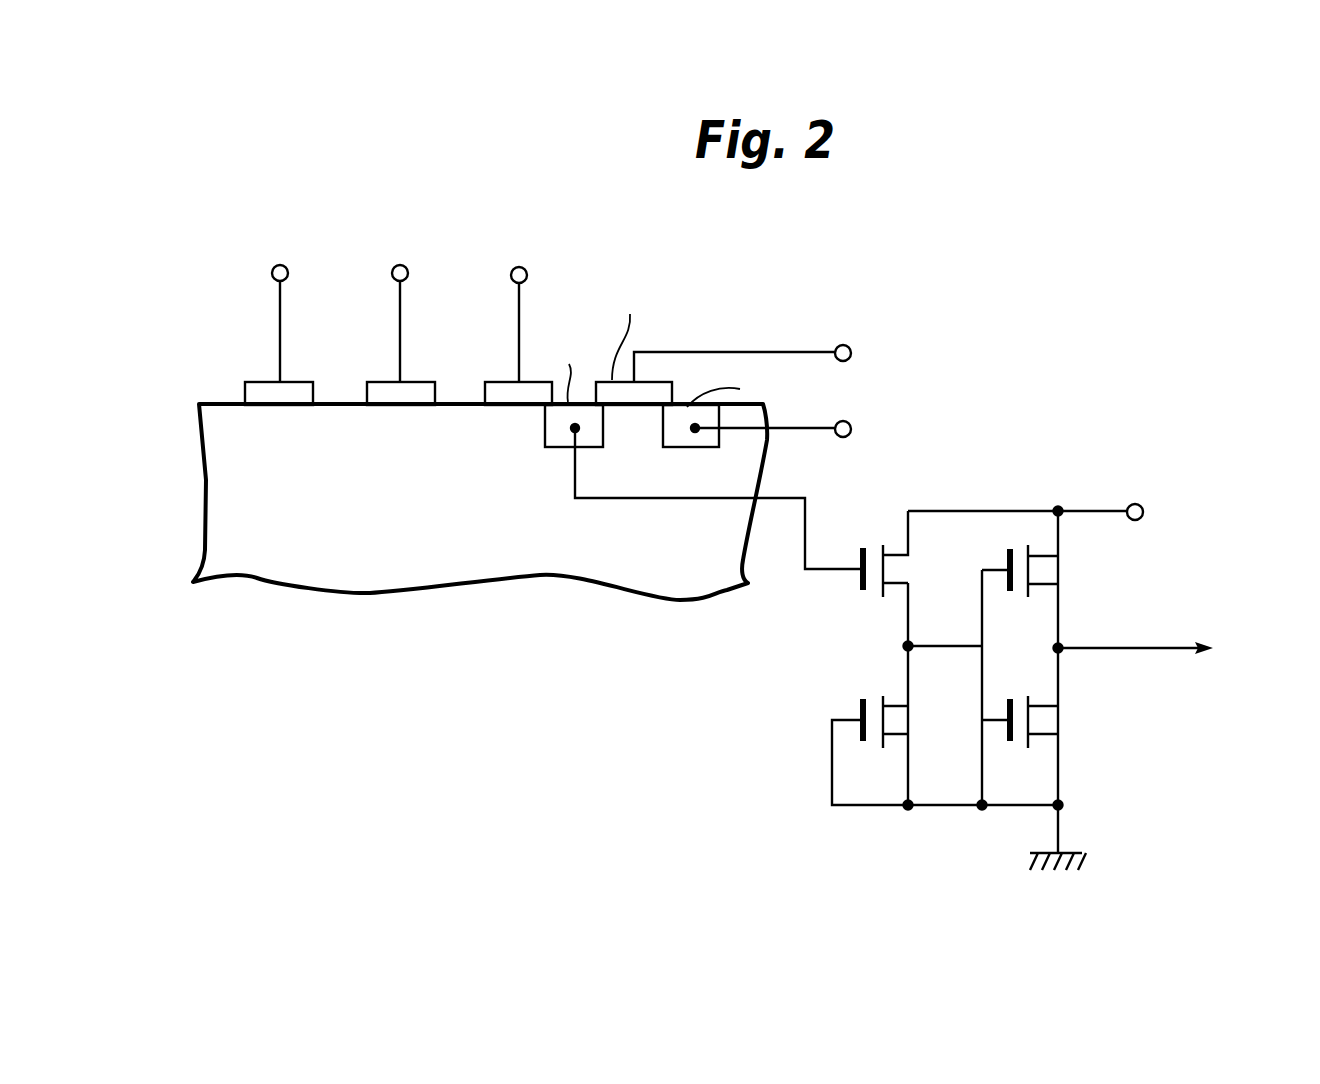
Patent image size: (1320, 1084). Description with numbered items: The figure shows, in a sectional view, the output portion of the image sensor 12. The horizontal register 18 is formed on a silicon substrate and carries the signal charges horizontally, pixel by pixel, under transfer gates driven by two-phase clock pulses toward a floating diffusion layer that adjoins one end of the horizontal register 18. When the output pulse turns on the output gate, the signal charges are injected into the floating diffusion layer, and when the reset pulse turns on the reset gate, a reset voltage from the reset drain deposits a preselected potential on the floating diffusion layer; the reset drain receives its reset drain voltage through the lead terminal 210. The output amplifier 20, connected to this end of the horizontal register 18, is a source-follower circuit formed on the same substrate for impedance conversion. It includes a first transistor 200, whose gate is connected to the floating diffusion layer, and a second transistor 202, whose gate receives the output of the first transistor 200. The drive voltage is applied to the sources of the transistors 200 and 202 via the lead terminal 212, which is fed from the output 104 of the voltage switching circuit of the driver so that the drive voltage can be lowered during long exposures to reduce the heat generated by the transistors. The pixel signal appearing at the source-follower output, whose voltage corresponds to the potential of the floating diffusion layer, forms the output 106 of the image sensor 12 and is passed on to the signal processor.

The image sensor 12 is at (452, 776).
The horizontal register 18 is at (246, 478).
The output amplifier 20 is at (978, 639).
The first transistor 200 is at (885, 540).
The second transistor 202 is at (1008, 550).
The lead terminal 210 is at (846, 422).
The lead terminal 212 is at (1134, 503).
The output 104 is at (1088, 510).
The output 106 is at (1137, 652).